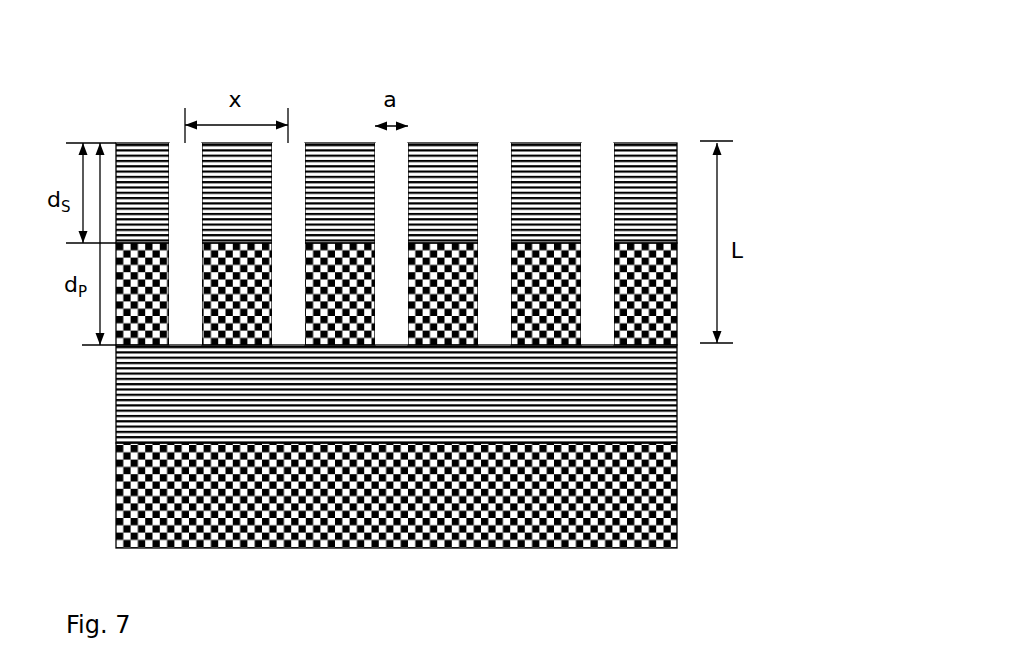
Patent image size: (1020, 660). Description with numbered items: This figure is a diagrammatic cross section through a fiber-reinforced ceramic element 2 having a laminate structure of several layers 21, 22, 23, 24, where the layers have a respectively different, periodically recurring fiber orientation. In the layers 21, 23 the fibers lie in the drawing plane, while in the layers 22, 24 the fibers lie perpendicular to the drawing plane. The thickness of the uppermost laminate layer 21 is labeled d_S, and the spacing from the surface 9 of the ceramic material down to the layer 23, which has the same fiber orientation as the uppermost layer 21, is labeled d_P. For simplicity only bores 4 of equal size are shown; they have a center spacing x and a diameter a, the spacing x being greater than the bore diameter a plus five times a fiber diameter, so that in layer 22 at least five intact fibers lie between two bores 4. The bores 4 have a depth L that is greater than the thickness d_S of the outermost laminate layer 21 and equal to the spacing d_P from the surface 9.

The fiber-reinforced ceramic element 2 is at (481, 454).
The bores 4 is at (495, 142).
The surface 9 is at (506, 173).
The laminate layer 21 is at (677, 208).
The laminate layer 22 is at (677, 293).
The laminate layer 23 is at (677, 418).
The laminate layer 24 is at (677, 497).